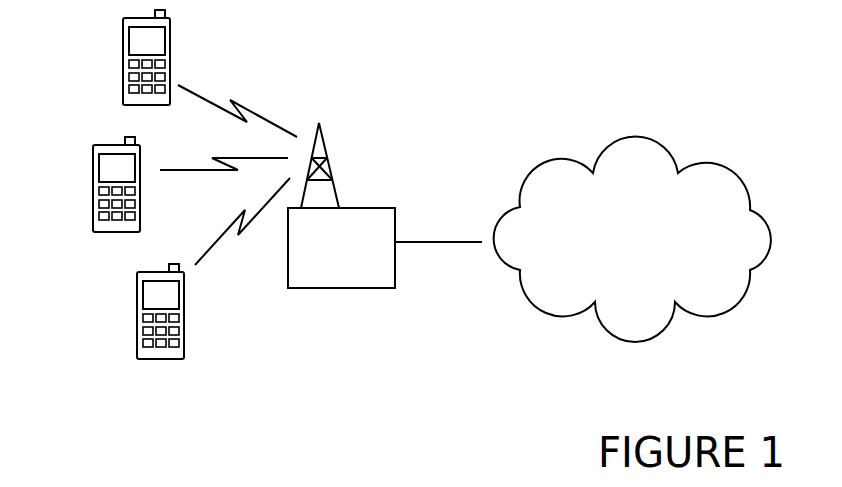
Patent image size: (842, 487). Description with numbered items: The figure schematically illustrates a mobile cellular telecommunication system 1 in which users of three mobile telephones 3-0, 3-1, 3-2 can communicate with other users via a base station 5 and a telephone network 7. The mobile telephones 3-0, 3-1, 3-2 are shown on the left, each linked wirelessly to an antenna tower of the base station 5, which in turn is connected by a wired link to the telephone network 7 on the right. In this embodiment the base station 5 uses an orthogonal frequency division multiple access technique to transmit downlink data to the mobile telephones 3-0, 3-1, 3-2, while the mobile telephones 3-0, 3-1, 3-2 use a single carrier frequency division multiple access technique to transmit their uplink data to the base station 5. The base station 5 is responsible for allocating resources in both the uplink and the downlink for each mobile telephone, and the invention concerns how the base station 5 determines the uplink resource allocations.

The mobile telecommunication system 1 is at (336, 397).
The mobile telephone 3-0 is at (123, 95).
The mobile telephone 3-1 is at (92, 220).
The mobile telephone 3-2 is at (137, 345).
The base station 5 is at (375, 208).
The telephone network 7 is at (663, 148).